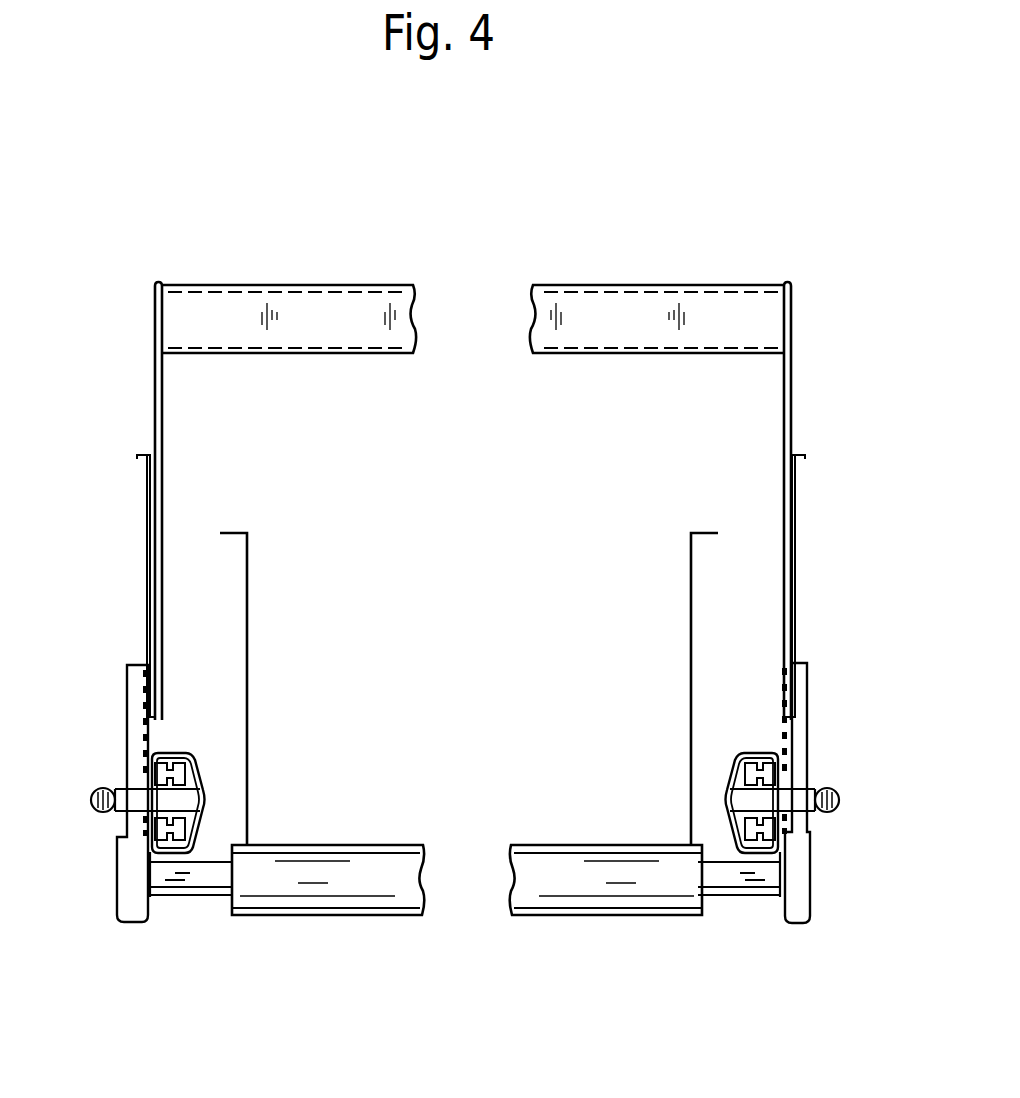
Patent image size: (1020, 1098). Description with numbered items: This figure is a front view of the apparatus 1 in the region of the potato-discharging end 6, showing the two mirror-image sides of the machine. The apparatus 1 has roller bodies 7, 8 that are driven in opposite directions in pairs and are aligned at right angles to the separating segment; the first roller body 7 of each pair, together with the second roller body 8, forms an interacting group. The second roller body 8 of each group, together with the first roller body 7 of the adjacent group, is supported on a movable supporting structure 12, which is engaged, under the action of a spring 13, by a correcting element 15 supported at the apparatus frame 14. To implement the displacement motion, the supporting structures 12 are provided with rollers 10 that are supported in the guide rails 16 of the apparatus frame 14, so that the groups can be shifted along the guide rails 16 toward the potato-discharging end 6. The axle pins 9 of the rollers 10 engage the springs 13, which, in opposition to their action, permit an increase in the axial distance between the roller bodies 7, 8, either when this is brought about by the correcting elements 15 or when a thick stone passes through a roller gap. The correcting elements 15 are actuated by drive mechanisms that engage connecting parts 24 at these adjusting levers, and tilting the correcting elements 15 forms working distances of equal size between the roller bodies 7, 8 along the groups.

The apparatus 1 is at (645, 183).
The potato-discharging end 6 is at (465, 942).
The first roller body 7 is at (467, 926).
The second roller body 8 is at (322, 930).
The axle pin 9 is at (465, 749).
The roller 10 is at (170, 818).
The supporting structure 12 is at (137, 455).
The spring 13 is at (102, 788).
The apparatus frame 14 is at (112, 830).
The correcting element 15 is at (157, 385).
The guide rail 16 is at (183, 755).
The connecting part 24 is at (374, 354).